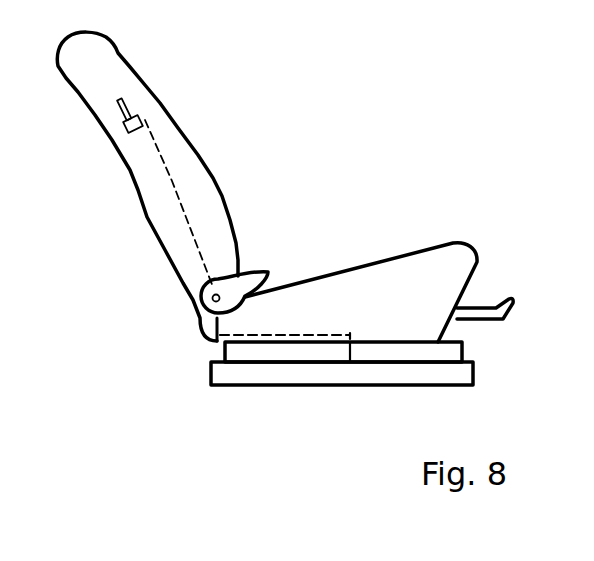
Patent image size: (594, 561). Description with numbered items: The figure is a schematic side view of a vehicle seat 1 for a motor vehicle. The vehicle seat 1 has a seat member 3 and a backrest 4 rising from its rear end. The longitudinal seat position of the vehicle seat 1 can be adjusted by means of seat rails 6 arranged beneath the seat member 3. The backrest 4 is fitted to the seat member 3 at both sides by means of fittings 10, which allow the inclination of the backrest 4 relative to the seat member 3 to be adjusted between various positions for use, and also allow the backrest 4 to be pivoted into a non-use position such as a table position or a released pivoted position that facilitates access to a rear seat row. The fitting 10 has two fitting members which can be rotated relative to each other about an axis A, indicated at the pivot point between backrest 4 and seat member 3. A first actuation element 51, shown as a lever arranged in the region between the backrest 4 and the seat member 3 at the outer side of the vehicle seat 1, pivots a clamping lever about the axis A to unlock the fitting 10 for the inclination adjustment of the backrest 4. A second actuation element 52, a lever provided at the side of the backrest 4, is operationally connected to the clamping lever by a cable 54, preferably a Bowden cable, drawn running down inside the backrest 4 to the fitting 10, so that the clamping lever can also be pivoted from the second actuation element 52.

The vehicle seat 1 is at (340, 140).
The seat member 3 is at (442, 262).
The backrest 4 is at (120, 65).
The seat rails 6 is at (418, 353).
The fitting 10 is at (190, 305).
The first actuation element 51 is at (268, 272).
The second actuation element 52 is at (125, 130).
The cable 54 is at (170, 181).
The axis A is at (213, 297).